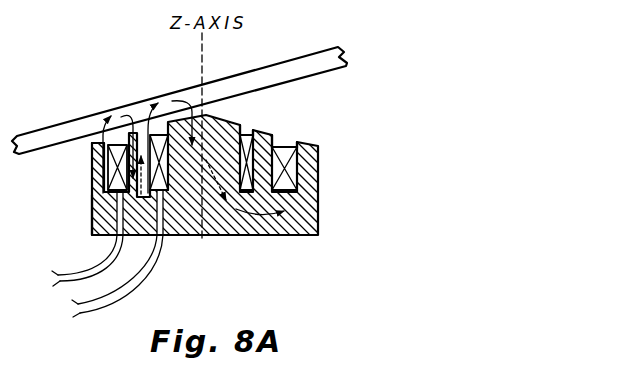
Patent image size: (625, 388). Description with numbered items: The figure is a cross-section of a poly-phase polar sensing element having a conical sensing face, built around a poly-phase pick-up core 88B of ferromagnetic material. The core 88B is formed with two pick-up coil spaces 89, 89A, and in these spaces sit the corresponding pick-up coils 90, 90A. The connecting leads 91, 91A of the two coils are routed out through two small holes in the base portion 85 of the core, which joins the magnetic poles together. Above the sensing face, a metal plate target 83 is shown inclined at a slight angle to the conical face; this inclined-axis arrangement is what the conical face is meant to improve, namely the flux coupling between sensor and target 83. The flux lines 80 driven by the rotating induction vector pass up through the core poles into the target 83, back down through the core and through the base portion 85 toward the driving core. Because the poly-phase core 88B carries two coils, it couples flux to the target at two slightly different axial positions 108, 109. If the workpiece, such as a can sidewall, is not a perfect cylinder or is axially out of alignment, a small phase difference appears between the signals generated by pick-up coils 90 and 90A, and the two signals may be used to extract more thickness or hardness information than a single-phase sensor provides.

The flux lines 80 is at (103, 133).
The metal plate target 83 is at (303, 56).
The base portion 85 is at (92, 214).
The poly-phase pick-up core 88B is at (318, 181).
The pick-up coil space 89 is at (242, 129).
The pick-up coil space 89A is at (293, 146).
The pick-up coil 90 is at (243, 128).
The pick-up coil 90A is at (277, 143).
The connecting leads 91 is at (102, 254).
The connecting leads 91A is at (68, 239).
The axial position 108 is at (98, 116).
The axial position 109 is at (170, 93).